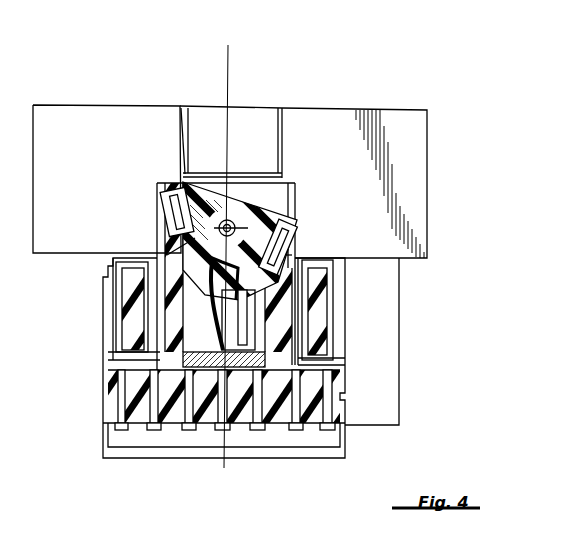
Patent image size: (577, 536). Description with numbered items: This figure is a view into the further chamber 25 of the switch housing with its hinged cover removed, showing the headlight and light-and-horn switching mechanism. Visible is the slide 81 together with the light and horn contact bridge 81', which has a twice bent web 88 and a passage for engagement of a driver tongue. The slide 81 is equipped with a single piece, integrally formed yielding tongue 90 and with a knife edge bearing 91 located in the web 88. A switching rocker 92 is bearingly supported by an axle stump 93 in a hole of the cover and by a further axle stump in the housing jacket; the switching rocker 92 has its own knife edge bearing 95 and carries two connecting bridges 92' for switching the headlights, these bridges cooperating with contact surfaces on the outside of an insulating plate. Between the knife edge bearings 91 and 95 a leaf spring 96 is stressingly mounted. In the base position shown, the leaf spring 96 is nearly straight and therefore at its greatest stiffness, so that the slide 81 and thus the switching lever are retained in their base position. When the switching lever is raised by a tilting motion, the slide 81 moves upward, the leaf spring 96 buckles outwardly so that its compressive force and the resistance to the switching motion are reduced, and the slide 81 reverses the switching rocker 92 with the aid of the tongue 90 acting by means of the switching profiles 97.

The further chamber 25 is at (417, 190).
The slide 81 is at (342, 339).
The light and horn contact bridge 81' is at (354, 320).
The twice bent web 88 is at (205, 427).
The yielding tongue 90 is at (238, 283).
The knife edge bearing 91 is at (244, 425).
The switching rocker 92 is at (282, 197).
The connecting bridges 92' is at (239, 211).
The axle stump 93 is at (235, 233).
The knife edge bearing 95 is at (216, 220).
The leaf spring 96 is at (227, 312).
The switching profiles 97 is at (197, 242).